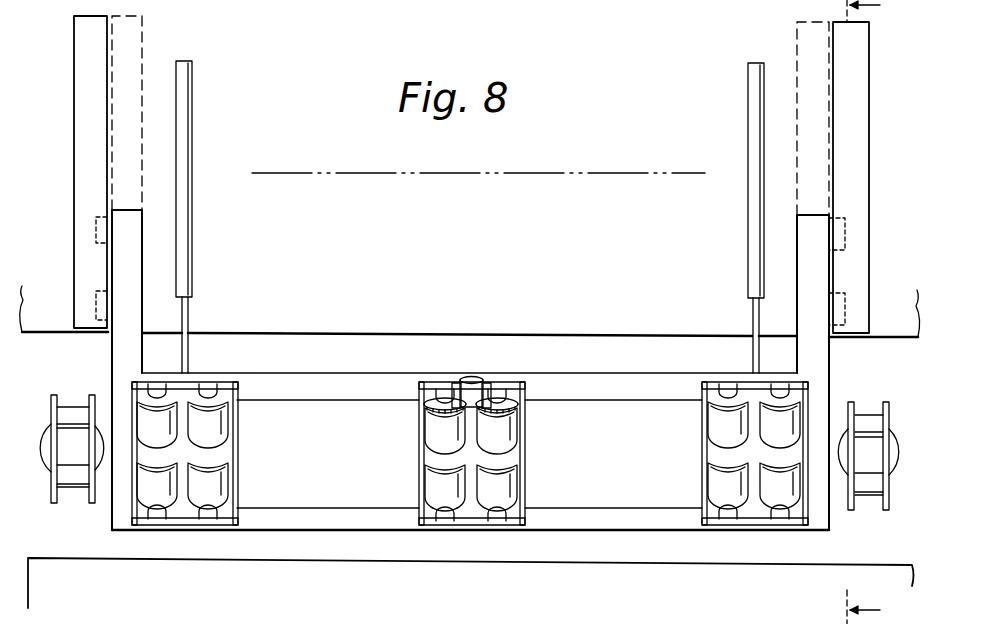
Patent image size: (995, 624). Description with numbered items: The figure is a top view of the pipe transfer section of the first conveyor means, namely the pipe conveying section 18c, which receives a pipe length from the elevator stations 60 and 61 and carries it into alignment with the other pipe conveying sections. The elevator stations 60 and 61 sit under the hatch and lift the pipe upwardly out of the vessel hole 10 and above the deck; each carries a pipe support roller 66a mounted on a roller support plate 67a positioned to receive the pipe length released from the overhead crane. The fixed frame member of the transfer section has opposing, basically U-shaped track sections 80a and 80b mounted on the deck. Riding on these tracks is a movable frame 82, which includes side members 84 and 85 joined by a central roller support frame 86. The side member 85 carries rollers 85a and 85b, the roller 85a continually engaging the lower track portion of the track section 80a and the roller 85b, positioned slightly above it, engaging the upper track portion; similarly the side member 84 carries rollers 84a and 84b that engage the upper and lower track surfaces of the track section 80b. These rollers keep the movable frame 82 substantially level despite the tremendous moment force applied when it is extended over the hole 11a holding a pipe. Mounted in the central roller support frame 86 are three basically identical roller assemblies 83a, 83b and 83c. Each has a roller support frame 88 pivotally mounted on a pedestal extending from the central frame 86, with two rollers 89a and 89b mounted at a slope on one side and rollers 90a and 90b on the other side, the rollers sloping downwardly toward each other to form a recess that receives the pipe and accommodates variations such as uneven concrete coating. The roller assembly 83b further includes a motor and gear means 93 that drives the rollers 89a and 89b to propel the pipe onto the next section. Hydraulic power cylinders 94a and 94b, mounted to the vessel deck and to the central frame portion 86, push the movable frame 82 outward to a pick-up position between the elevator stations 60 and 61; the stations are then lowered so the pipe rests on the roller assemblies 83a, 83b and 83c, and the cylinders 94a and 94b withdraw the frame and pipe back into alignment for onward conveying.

The vessel hole 10 is at (882, 312).
The hole 11a is at (317, 557).
The pipe conveying section 18c is at (143, 33).
The elevator station 60 is at (447, 423).
The elevator station 61 is at (895, 436).
The pipe support roller 66a is at (74, 407).
The roller support plate 67a is at (52, 400).
The track section 80a is at (860, 36).
The track section 80b is at (75, 46).
The movable frame 82 is at (652, 372).
The roller assembly 83a is at (237, 493).
The roller assembly 83b is at (519, 452).
The roller assembly 83c is at (710, 454).
The side member 84 is at (143, 221).
The roller 84a is at (96, 291).
The roller 84b is at (96, 218).
The side member 85 is at (820, 265).
The roller 85a is at (847, 293).
The roller 85b is at (846, 218).
The central roller support frame 86 is at (614, 384).
The roller support frame 88 is at (185, 526).
The roller 89a is at (215, 431).
The roller 89b is at (165, 414).
The roller 90a is at (165, 485).
The roller 90b is at (218, 470).
The motor and gear means 93 is at (473, 374).
The hydraulic power cylinder 94a is at (193, 238).
The hydraulic power cylinder 94b is at (747, 220).